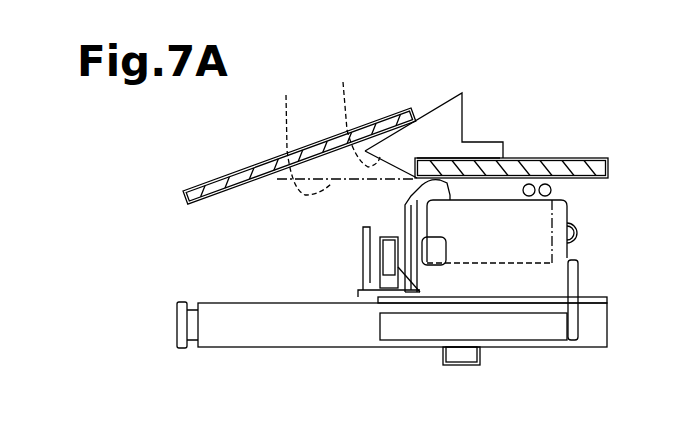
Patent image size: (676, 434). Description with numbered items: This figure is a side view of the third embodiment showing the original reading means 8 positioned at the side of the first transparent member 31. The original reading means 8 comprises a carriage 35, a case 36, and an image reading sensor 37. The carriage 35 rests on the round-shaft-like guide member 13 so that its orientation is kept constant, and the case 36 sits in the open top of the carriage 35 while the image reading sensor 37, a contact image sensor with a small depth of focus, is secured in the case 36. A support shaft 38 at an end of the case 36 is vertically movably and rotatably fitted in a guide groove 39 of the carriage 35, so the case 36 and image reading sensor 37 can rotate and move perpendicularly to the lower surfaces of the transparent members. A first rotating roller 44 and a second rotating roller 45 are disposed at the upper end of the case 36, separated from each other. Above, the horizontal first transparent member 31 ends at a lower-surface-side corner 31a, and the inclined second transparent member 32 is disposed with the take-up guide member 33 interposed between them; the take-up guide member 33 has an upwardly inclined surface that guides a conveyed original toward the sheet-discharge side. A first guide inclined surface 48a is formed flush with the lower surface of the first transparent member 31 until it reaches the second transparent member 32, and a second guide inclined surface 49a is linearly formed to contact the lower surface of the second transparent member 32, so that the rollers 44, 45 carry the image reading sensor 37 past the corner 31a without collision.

The original reading means 8 is at (599, 293).
The guide member 13 is at (268, 330).
The first transparent member 31 is at (593, 172).
The lower-surface-side corner 31a is at (420, 163).
The second transparent member 32 is at (222, 172).
The take-up guide member 33 is at (450, 125).
The carriage 35 is at (576, 300).
The case 36 is at (527, 277).
The image reading sensor 37 is at (585, 233).
The support shaft 38 is at (433, 247).
The guide groove 39 is at (443, 222).
The first rotating roller 44 is at (420, 186).
The second rotating roller 45 is at (552, 190).
The first guide inclined surface 48a is at (299, 133).
The second guide inclined surface 49a is at (353, 113).